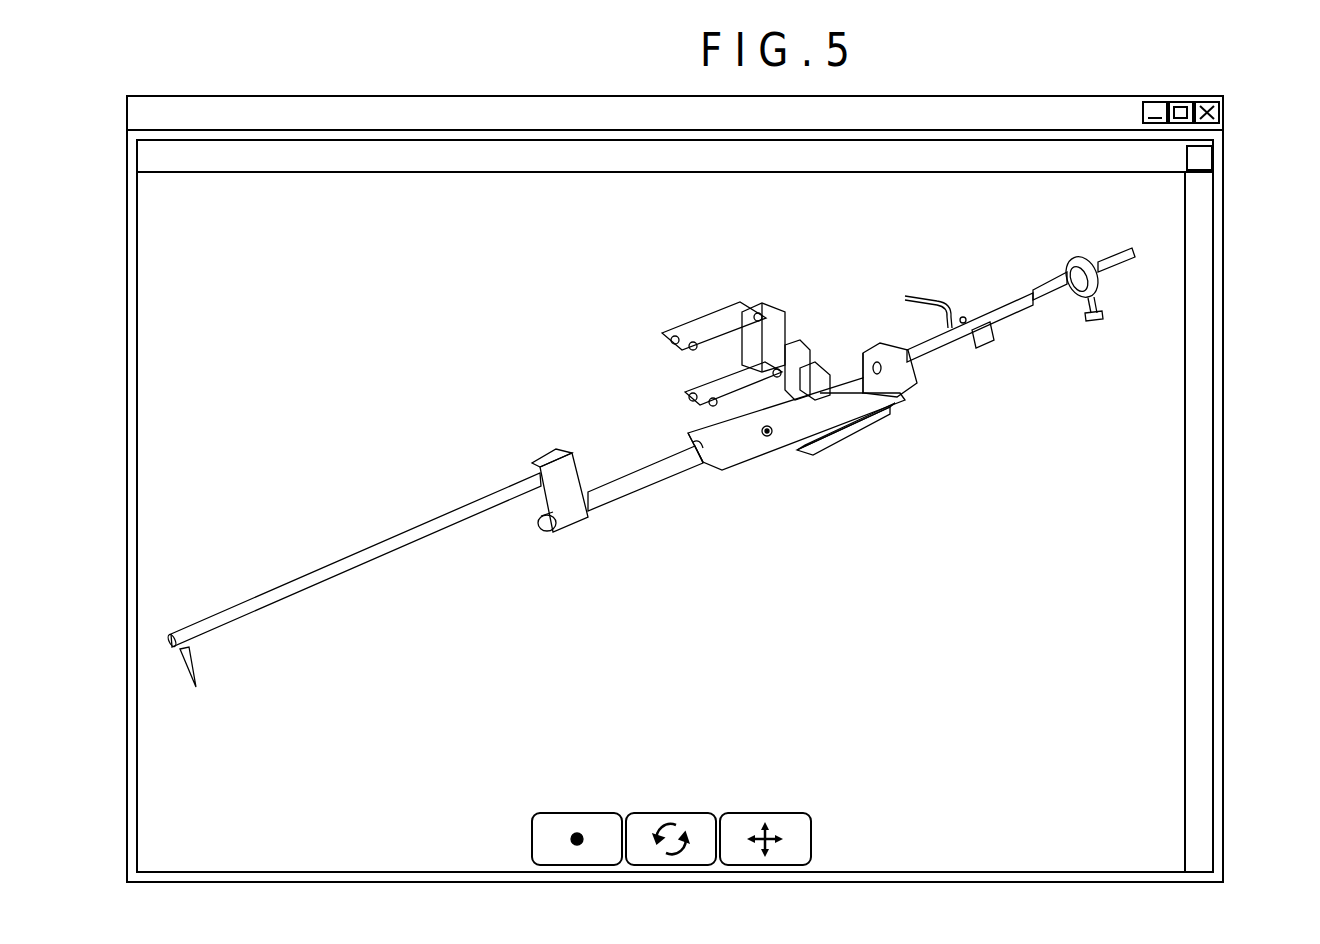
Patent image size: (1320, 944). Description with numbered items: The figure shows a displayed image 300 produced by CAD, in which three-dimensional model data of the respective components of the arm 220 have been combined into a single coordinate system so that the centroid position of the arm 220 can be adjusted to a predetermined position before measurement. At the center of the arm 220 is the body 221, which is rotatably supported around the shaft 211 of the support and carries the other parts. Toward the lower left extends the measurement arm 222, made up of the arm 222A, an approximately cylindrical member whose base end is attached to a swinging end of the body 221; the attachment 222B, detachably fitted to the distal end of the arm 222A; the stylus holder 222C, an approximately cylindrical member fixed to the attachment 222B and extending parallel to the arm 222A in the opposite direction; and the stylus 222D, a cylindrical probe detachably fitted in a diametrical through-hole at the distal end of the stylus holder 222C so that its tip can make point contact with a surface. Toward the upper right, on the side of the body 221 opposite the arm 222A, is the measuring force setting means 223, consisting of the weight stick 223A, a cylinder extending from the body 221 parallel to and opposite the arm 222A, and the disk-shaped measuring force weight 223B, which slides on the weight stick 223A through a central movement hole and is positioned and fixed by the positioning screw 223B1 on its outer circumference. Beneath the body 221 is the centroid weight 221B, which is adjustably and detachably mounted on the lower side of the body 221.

The displayed image 300 is at (1228, 250).
The arm 220 is at (525, 341).
The measurement arm 222 is at (428, 525).
The arm 222A is at (627, 494).
The attachment 222B is at (545, 460).
The stylus holder 222C is at (350, 566).
The stylus 222D is at (198, 670).
The body 221 is at (737, 466).
The centroid weight 221B is at (853, 440).
The shaft 211 is at (775, 440).
The measuring force setting means 223 is at (1003, 304).
The weight stick 223A is at (1051, 308).
The measuring force weight 223B is at (1100, 282).
The positioning screw 223B1 is at (1097, 322).